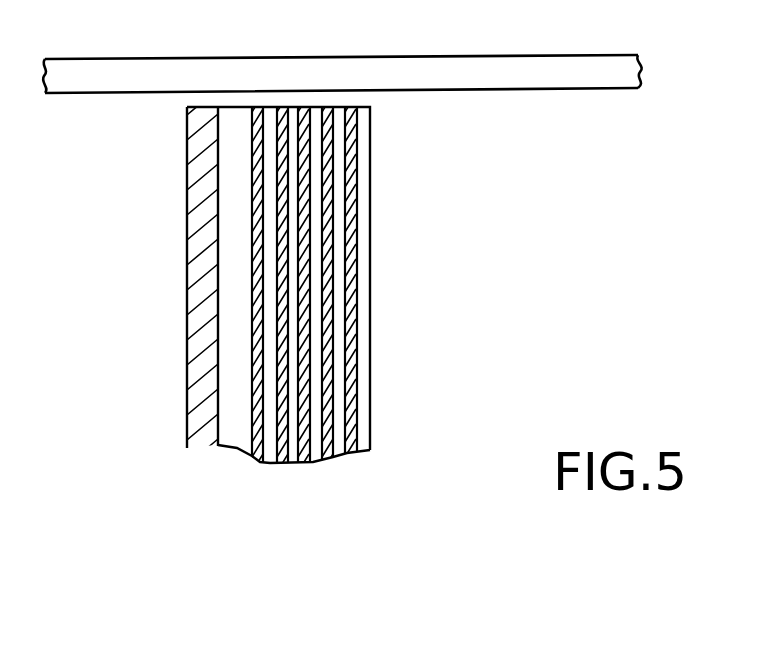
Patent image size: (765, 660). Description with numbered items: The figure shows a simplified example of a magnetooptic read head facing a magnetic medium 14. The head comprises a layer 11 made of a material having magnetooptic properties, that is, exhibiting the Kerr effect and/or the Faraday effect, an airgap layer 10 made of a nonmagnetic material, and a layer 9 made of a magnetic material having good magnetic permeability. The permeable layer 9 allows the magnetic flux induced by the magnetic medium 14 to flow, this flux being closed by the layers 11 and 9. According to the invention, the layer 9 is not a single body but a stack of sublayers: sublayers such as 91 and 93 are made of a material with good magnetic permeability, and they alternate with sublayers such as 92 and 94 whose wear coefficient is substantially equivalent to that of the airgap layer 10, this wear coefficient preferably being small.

The magnetic medium 14 is at (513, 68).
The layer made of a material having magnetooptic properties 11 is at (197, 390).
The airgap layer 10 is at (227, 423).
The layer made of a magnetic material having good magnetic permeability 9 is at (309, 323).
The sublayer made of a material with good magnetic permeability 91 is at (239, 453).
The sublayer having a wear coefficient substantially equivalent to that of the airga 92 is at (268, 443).
The sublayer made of a material with good magnetic permeability 93 is at (284, 438).
The sublayer having a wear coefficient substantially equivalent to that of the airga 94 is at (351, 291).